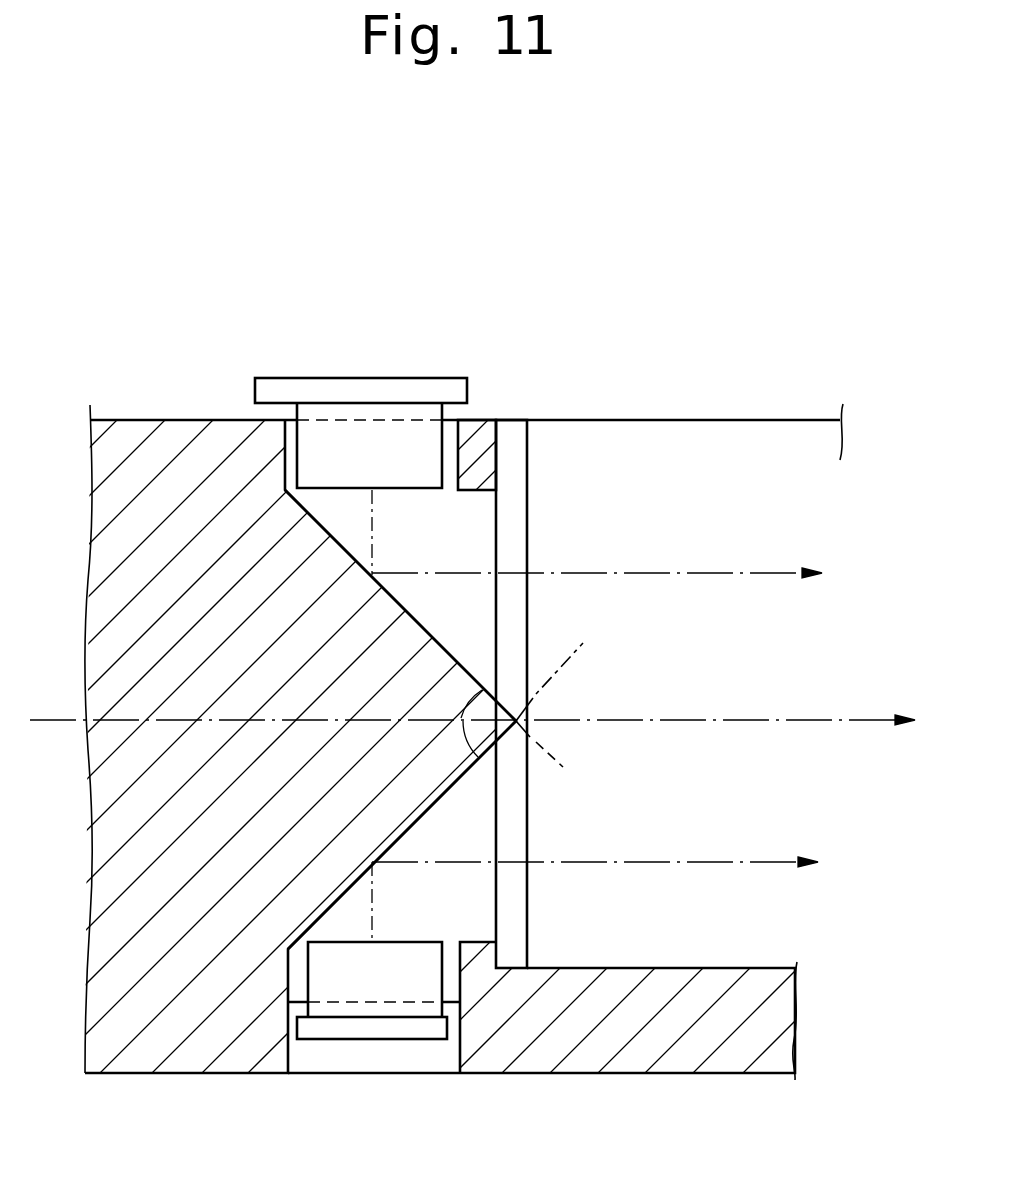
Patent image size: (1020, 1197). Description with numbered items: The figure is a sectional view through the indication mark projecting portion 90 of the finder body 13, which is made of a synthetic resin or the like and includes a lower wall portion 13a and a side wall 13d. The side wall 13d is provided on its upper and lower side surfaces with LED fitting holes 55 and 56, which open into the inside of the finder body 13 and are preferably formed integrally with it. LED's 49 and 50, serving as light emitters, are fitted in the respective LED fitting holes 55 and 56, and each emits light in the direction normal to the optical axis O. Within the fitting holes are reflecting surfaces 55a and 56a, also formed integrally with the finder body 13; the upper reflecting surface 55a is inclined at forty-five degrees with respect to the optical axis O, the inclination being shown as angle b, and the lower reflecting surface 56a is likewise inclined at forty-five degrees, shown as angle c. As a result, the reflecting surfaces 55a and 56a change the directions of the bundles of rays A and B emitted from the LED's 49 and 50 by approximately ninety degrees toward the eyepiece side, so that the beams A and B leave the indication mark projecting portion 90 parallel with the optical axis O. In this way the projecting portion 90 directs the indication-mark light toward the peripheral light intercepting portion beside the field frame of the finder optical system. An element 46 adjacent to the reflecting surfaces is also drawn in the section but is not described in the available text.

The finder body 13 is at (190, 412).
The lower wall portion 13a is at (682, 1055).
The side wall 13d is at (160, 945).
The mirror plate 46 is at (518, 468).
The LED 49 is at (360, 432).
The LED 50 is at (408, 988).
The LED fitting hole 55 is at (460, 470).
The LED fitting hole 56 is at (457, 955).
The reflecting surface 55a is at (427, 630).
The reflecting surface 56a is at (443, 783).
The indication mark projecting portion 90 is at (288, 334).
The bundle of light A is at (730, 573).
The bundle of light B is at (740, 862).
The optical axis O is at (850, 720).
The angle b is at (461, 718).
The angle c is at (467, 744).